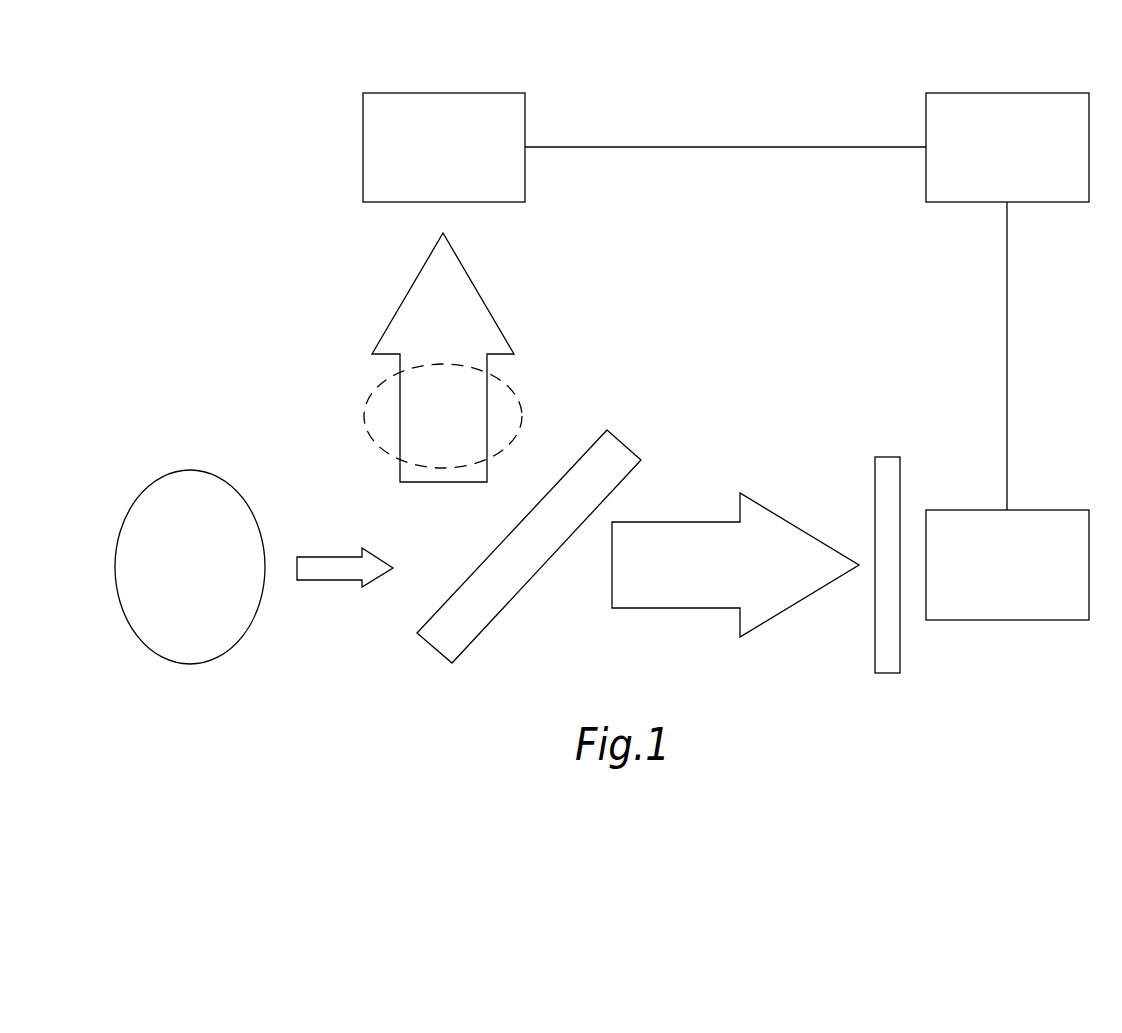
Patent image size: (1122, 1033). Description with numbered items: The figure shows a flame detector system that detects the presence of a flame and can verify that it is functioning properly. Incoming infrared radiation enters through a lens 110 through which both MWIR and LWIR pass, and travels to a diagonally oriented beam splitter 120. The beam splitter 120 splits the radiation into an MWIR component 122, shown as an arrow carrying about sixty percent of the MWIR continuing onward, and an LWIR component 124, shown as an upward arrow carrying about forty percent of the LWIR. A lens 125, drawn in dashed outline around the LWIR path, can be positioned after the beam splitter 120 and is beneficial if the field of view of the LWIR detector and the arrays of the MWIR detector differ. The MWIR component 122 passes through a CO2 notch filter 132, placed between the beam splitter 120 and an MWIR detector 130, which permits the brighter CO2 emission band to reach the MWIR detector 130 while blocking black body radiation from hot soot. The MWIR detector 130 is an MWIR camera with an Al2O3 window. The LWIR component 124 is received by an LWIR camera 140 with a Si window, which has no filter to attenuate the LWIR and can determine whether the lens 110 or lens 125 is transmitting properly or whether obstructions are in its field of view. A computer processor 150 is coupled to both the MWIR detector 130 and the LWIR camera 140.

The lens 110 is at (190, 470).
The beam splitter 120 is at (480, 566).
The MWIR component 122 is at (676, 522).
The LWIR component 124 is at (482, 291).
The lens 125 is at (365, 416).
The MWIR detector 130 is at (1007, 621).
The CO2 notch filter 132 is at (887, 457).
The LWIR camera 140 is at (443, 93).
The computer processor 150 is at (1007, 93).